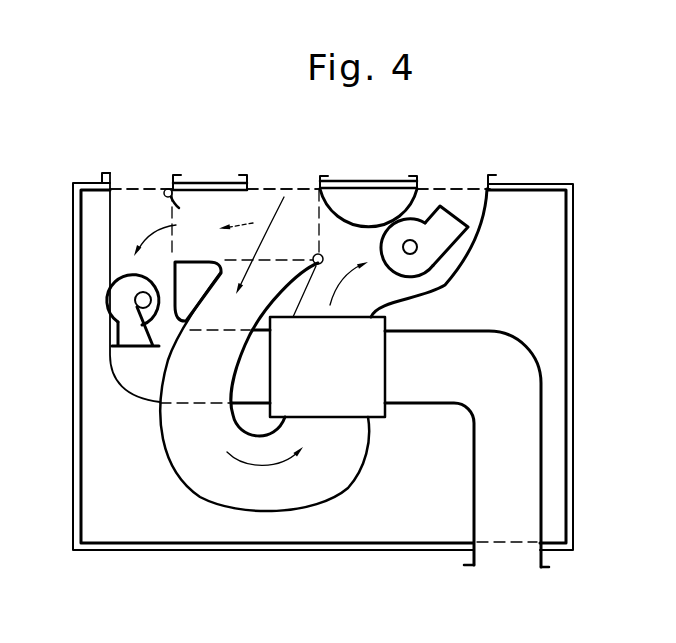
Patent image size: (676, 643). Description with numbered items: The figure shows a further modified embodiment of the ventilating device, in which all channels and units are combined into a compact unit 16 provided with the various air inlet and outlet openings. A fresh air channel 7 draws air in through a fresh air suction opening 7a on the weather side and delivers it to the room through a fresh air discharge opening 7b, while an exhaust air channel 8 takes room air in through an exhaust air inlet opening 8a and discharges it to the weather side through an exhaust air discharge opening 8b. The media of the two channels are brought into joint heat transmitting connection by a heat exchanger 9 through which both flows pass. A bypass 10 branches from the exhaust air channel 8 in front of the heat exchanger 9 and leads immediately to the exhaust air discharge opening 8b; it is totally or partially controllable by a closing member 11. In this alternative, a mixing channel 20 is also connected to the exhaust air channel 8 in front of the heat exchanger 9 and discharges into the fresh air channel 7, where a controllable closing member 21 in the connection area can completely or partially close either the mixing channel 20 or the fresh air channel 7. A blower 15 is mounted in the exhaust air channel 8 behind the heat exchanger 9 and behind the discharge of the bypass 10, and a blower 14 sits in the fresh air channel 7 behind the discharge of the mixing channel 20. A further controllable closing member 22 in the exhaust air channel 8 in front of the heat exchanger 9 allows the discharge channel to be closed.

The fresh air channel 7 is at (135, 378).
The fresh air suction opening 7a is at (140, 137).
The fresh air discharge opening 7b is at (507, 503).
The exhaust air channel 8 is at (257, 500).
The exhaust air inlet opening 8a is at (282, 135).
The exhaust air discharge opening 8b is at (462, 195).
The heat exchanger 9 is at (337, 380).
The bypass 10 is at (332, 233).
The closing member 11 is at (318, 207).
The blower 14 is at (127, 328).
The blower 15 is at (447, 236).
The compact unit 16 is at (375, 560).
The mixing channel 20 is at (195, 228).
The controllable closing member 21 is at (190, 192).
The further controllable closing member 22 is at (234, 262).